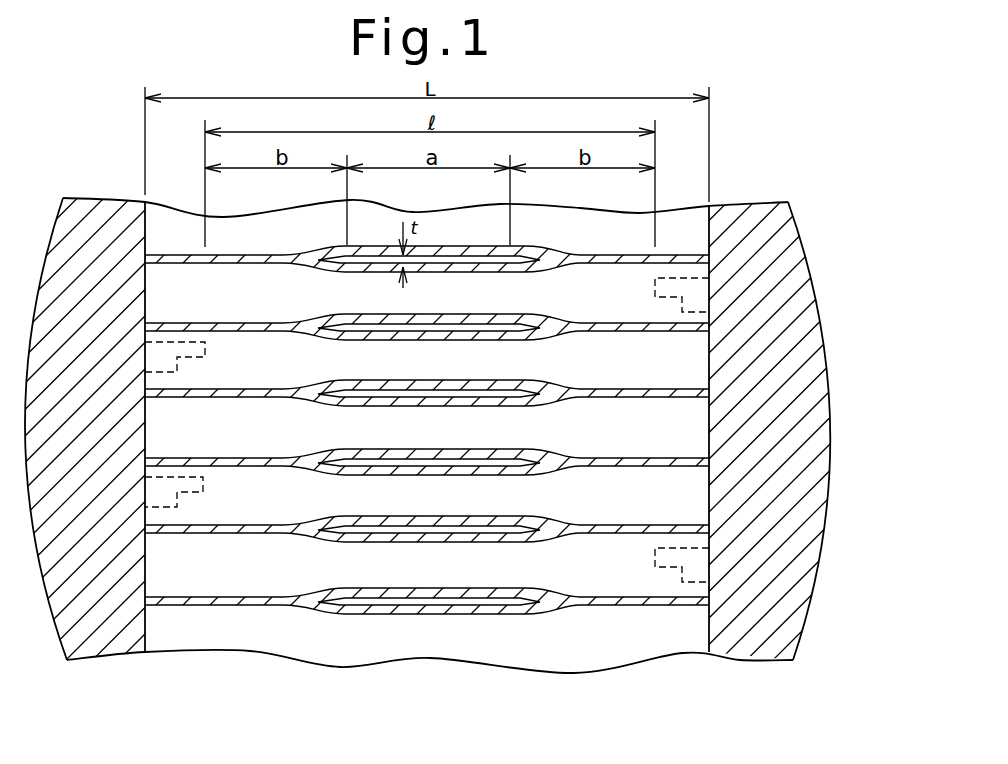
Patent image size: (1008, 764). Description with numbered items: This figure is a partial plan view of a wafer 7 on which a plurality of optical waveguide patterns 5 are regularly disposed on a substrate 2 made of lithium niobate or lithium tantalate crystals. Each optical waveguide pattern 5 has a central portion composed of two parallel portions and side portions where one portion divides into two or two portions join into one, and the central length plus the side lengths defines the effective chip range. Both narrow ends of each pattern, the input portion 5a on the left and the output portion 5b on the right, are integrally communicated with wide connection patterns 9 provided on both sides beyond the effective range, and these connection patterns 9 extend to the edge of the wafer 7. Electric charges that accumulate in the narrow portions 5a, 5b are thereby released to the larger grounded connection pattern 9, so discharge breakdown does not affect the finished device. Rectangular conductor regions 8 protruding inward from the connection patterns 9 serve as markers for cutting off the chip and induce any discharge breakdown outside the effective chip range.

The substrate 2 is at (607, 658).
The optical waveguide pattern 5 is at (539, 278).
The input portion 5a is at (233, 264).
The output portion 5b is at (640, 264).
The wafer 7 is at (432, 392).
The rectangular conductor region 8 is at (690, 314).
The wide connection pattern 9 is at (98, 646).